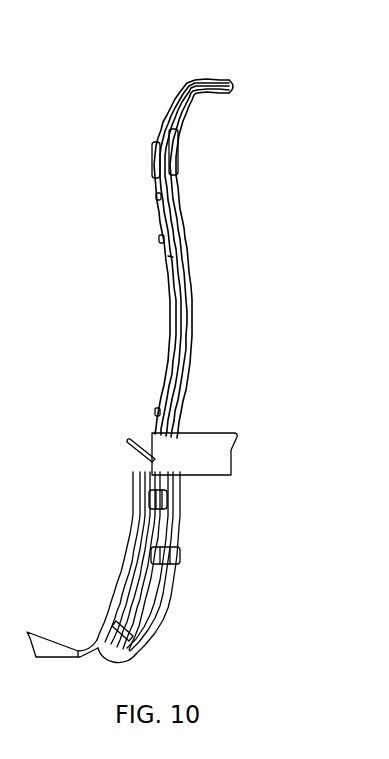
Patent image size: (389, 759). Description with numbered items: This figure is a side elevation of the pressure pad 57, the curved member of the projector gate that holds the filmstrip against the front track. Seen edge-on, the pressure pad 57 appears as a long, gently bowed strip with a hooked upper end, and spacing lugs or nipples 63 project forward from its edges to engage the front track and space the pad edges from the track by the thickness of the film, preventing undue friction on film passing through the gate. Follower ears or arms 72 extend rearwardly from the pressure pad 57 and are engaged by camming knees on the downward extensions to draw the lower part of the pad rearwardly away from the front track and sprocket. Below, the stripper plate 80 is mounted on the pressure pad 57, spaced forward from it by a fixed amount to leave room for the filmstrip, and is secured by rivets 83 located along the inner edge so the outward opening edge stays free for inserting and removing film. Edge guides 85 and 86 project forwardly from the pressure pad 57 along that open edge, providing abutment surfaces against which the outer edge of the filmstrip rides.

The pressure pad 57 is at (215, 78).
The edge guide 85 is at (152, 161).
The spacing lugs or nipples 63 is at (157, 200).
The edge guide 86 is at (154, 438).
The follower ears or arms 72 is at (232, 452).
The rivets 83 is at (168, 498).
The stripper plate 80 is at (137, 594).